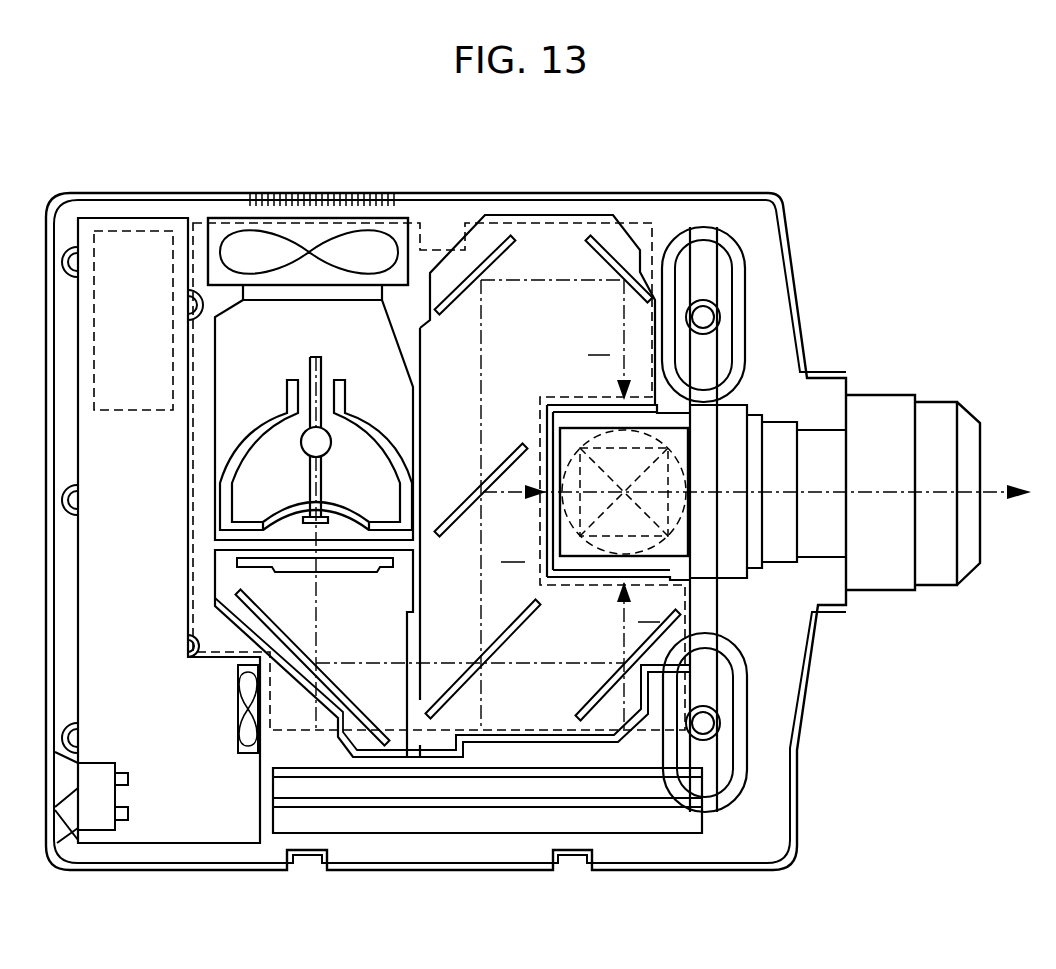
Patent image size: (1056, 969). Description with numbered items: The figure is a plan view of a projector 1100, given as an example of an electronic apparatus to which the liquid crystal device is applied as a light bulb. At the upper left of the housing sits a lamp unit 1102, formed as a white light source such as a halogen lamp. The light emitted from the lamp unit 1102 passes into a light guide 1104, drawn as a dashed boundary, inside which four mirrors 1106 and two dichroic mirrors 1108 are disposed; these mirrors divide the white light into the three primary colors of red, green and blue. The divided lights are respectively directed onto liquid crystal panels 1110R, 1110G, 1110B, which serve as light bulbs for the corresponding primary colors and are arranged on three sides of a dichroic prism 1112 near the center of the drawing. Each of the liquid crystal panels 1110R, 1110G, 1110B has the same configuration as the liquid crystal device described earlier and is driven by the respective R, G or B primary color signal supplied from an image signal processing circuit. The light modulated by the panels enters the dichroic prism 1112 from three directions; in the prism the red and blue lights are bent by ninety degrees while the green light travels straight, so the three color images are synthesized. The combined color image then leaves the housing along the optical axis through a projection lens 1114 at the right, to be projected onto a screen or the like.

The projector 1100 is at (815, 187).
The lamp unit 1102 is at (363, 338).
The light guide 1104 is at (496, 222).
The mirrors 1106 is at (602, 255).
The dichroic mirrors 1108 is at (508, 632).
The liquid crystal panel 1110R is at (587, 403).
The liquid crystal panel 1110G is at (553, 460).
The liquid crystal panel 1110B is at (585, 572).
The dichroic prism 1112 is at (672, 534).
The projection lens 1114 is at (947, 410).